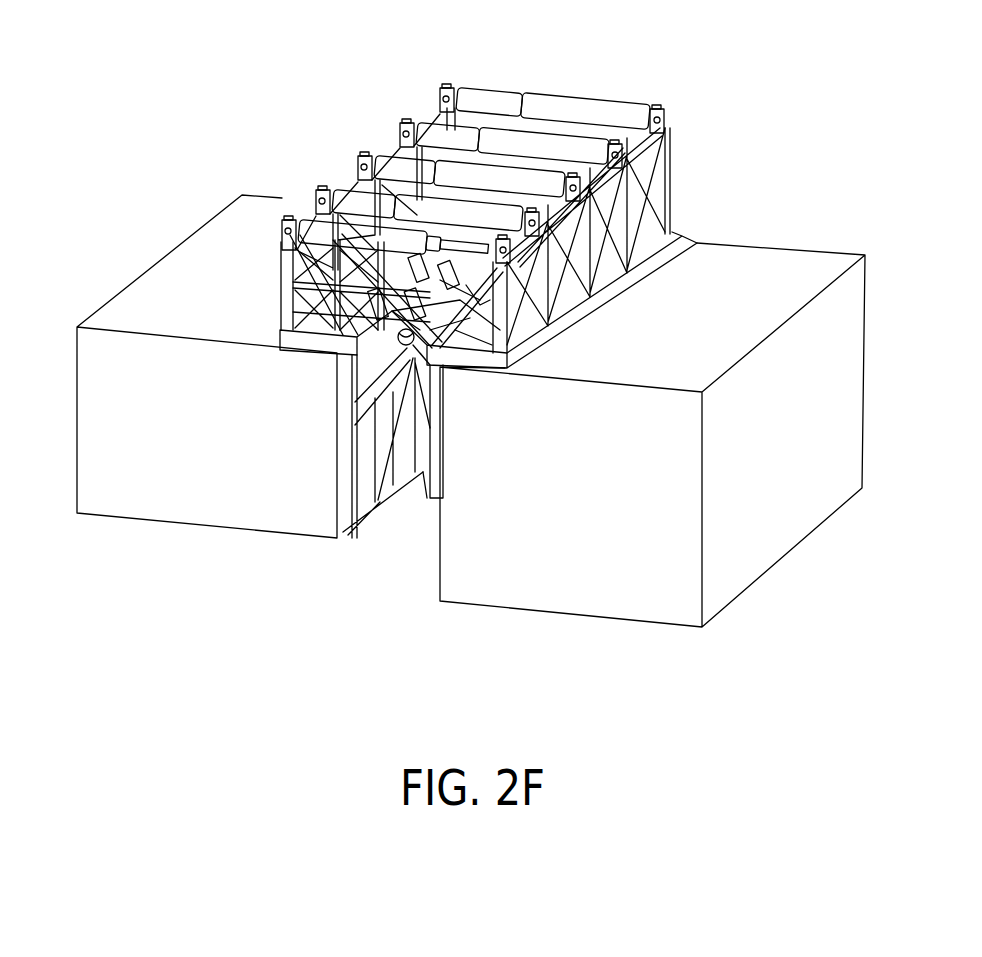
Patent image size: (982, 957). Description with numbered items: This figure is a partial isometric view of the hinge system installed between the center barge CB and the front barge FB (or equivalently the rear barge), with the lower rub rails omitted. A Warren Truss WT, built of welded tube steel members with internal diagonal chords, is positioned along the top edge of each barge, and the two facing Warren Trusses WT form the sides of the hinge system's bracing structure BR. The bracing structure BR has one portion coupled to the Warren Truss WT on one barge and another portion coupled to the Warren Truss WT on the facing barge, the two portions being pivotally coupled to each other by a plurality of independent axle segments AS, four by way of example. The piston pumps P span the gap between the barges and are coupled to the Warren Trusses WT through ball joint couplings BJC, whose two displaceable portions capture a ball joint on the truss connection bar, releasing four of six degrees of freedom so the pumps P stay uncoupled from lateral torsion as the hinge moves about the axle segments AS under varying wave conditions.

The front barge FB is at (165, 308).
The center barge CB is at (772, 277).
The Warren Truss WT is at (673, 170).
The piston pump P is at (482, 124).
The ball joint coupling BJC is at (440, 92).
The bracing structure BR is at (375, 397).
The axle segment AS is at (407, 348).